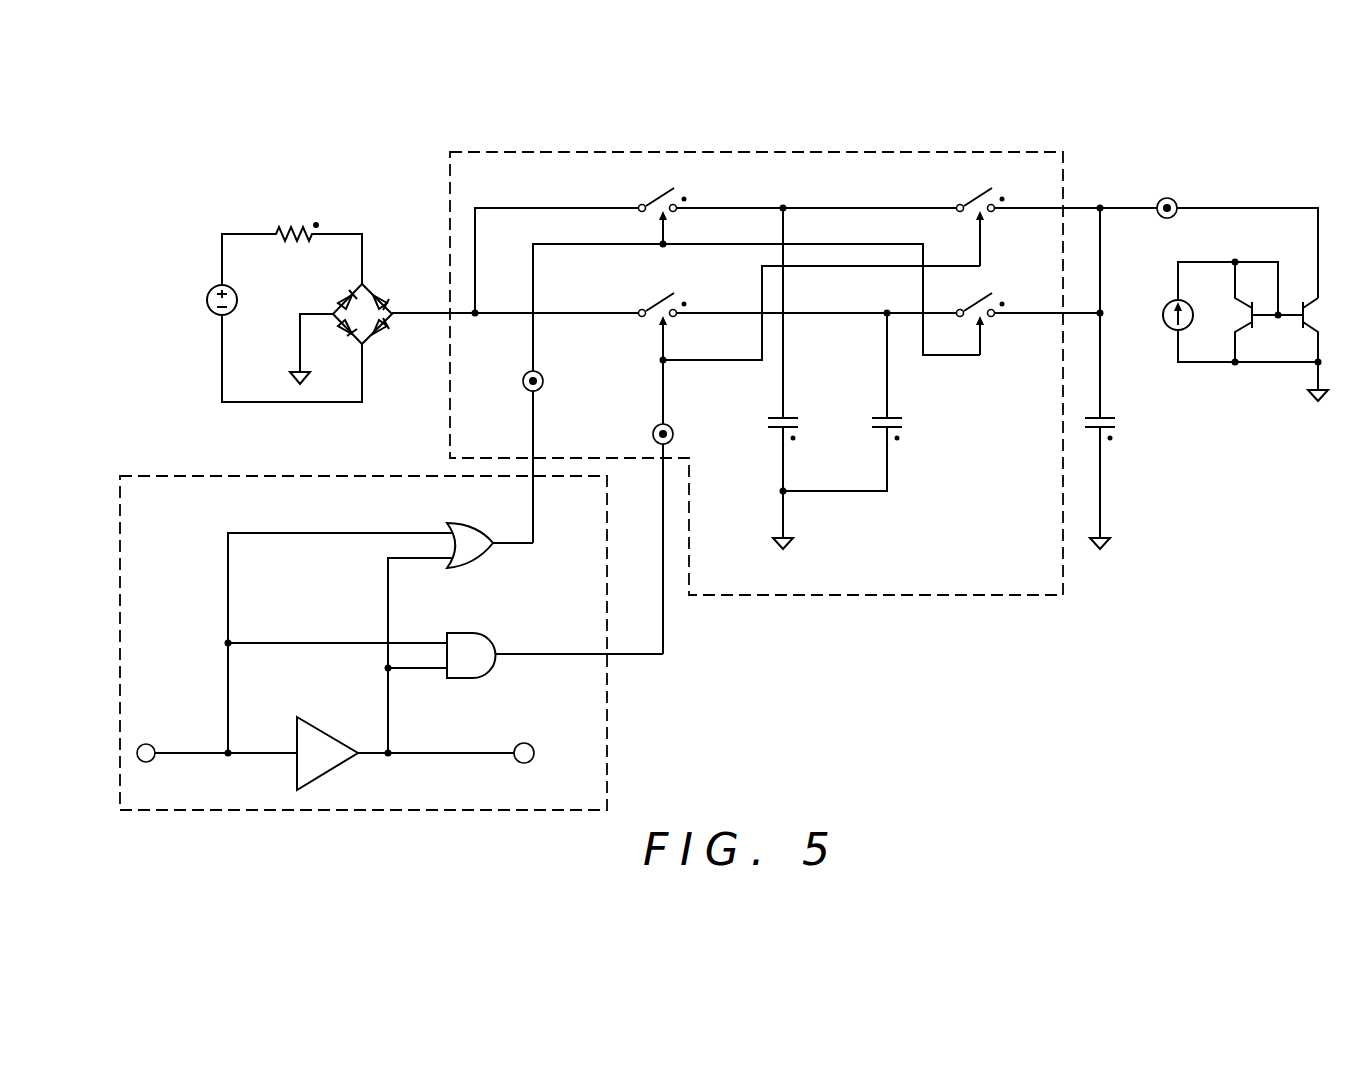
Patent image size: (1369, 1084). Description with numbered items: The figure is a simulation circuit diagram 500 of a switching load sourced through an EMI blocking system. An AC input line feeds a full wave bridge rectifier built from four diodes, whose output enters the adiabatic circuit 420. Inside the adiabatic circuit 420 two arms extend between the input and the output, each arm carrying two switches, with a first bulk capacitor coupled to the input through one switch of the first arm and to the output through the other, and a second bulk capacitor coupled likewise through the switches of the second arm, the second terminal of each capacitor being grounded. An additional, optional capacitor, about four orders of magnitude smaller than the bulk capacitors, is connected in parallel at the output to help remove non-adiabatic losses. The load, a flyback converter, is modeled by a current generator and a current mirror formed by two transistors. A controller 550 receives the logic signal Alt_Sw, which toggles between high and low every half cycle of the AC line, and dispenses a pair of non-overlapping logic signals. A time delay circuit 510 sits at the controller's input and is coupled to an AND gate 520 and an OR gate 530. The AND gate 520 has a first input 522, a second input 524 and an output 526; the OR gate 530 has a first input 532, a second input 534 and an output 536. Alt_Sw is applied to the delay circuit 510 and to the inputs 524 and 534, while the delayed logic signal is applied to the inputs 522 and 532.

The power supply control circuit 500 is at (194, 147).
The adiabatic circuit 420 is at (987, 597).
The controller 550 is at (607, 749).
The time delay circuit 510 is at (296, 730).
The AND gate 520 is at (464, 680).
The first input of the AND gate 522 is at (448, 672).
The second input of the AND gate 524 is at (445, 636).
The output of the AND gate 526 is at (504, 658).
The OR gate 530 is at (464, 568).
The first input of the OR gate 532 is at (448, 562).
The second input of the OR gate 534 is at (445, 528).
The output of the OR gate 536 is at (506, 548).